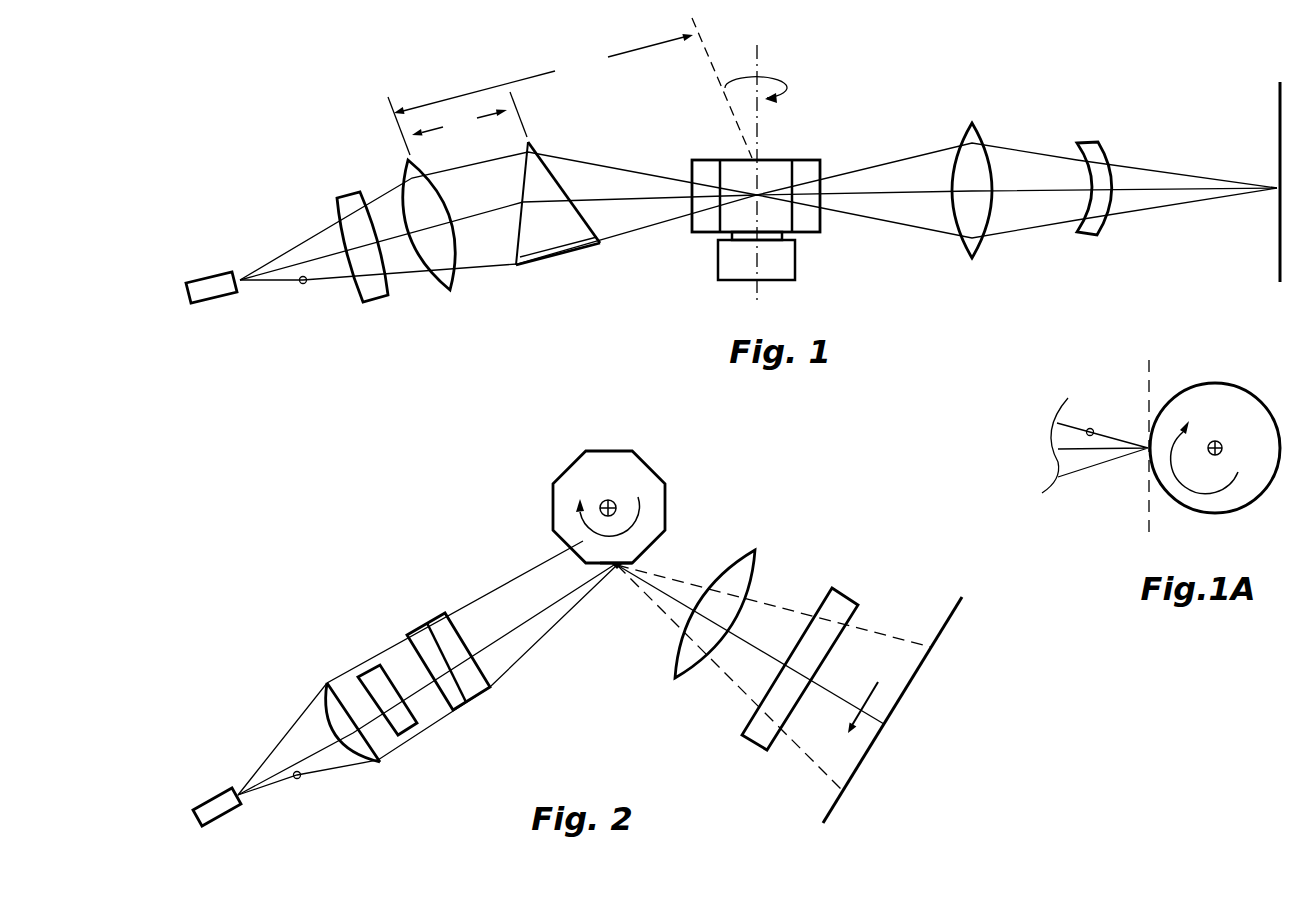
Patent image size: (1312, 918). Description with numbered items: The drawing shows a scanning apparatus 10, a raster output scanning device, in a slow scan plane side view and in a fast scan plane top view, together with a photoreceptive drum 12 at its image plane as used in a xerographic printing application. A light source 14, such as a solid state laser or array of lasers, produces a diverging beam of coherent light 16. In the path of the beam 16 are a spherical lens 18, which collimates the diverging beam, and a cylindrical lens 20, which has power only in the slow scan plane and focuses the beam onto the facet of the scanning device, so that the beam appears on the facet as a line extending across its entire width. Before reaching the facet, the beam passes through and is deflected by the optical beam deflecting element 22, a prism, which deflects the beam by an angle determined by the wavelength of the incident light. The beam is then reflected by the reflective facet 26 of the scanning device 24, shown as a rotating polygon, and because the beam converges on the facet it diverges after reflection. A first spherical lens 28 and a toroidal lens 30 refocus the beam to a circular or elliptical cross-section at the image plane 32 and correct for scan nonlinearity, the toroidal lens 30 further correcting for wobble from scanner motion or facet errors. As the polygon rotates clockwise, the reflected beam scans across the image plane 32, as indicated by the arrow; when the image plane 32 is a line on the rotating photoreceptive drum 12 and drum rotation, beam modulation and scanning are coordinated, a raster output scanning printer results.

In FIG. 1, the scanning apparatus 10 is at (1053, 62).
In FIG. 2, the scanning apparatus 10 is at (376, 545).
In FIG. 1A, the photoreceptive drum 12 is at (1213, 384).
In FIG. 1, the light source 14 is at (213, 287).
In FIG. 2, the light source 14 is at (220, 805).
In FIG. 1, the beam of coherent light 16 is at (303, 284).
In FIG. 1A, the beam of coherent light 16 is at (1090, 428).
In FIG. 2, the beam of coherent light 16 is at (297, 780).
In FIG. 1, the spherical lens 18 is at (348, 196).
In FIG. 2, the spherical lens 18 is at (330, 690).
In FIG. 1, the cylindrical lens 20 is at (450, 292).
In FIG. 2, the cylindrical lens 20 is at (373, 670).
In FIG. 1, the optical beam deflecting element 22 is at (555, 255).
In FIG. 2, the optical beam deflecting element 22 is at (418, 636).
In FIG. 1, the scanning device 24 is at (693, 161).
In FIG. 2, the scanning device 24 is at (637, 477).
In FIG. 1, the reflective facet 26 is at (770, 173).
In FIG. 2, the reflective facet 26 is at (622, 567).
In FIG. 1, the first spherical lens 28 is at (972, 258).
In FIG. 2, the first spherical lens 28 is at (752, 558).
In FIG. 1, the toroidal lens 30 is at (1092, 234).
In FIG. 2, the toroidal lens 30 is at (843, 590).
In FIG. 1, the image plane 32 is at (1280, 222).
In FIG. 2, the image plane 32 is at (912, 680).